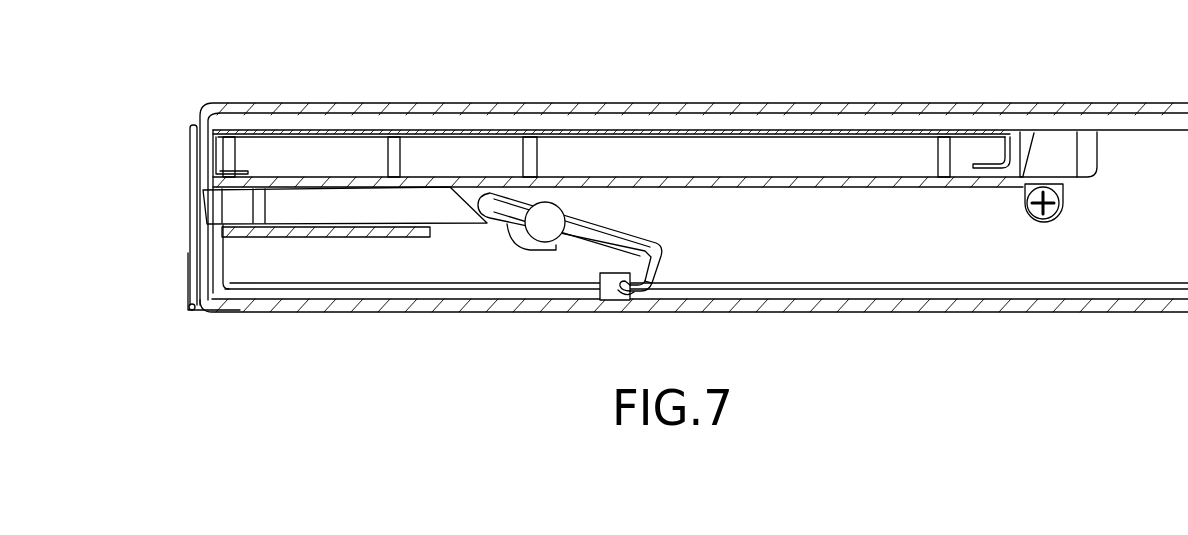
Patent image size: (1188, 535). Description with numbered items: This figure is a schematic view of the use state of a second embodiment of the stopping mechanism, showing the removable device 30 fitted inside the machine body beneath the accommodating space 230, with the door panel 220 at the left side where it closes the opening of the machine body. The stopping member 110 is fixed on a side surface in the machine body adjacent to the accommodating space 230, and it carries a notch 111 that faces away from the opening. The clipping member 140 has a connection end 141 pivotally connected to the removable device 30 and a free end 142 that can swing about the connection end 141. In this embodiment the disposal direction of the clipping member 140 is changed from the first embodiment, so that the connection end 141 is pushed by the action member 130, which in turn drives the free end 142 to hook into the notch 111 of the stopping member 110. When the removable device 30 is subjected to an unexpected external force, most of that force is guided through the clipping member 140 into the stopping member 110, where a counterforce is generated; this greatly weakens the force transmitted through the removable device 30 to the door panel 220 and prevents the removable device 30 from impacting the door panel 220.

The removable device 30 is at (1145, 287).
The stopping member 110 is at (610, 297).
The notch 111 is at (622, 293).
The action member 130 is at (320, 232).
The clipping member 140 is at (608, 233).
The connection end 141 is at (487, 188).
The free end 142 is at (650, 285).
The door panel 220 is at (192, 138).
The accommodating space 230 is at (1157, 118).